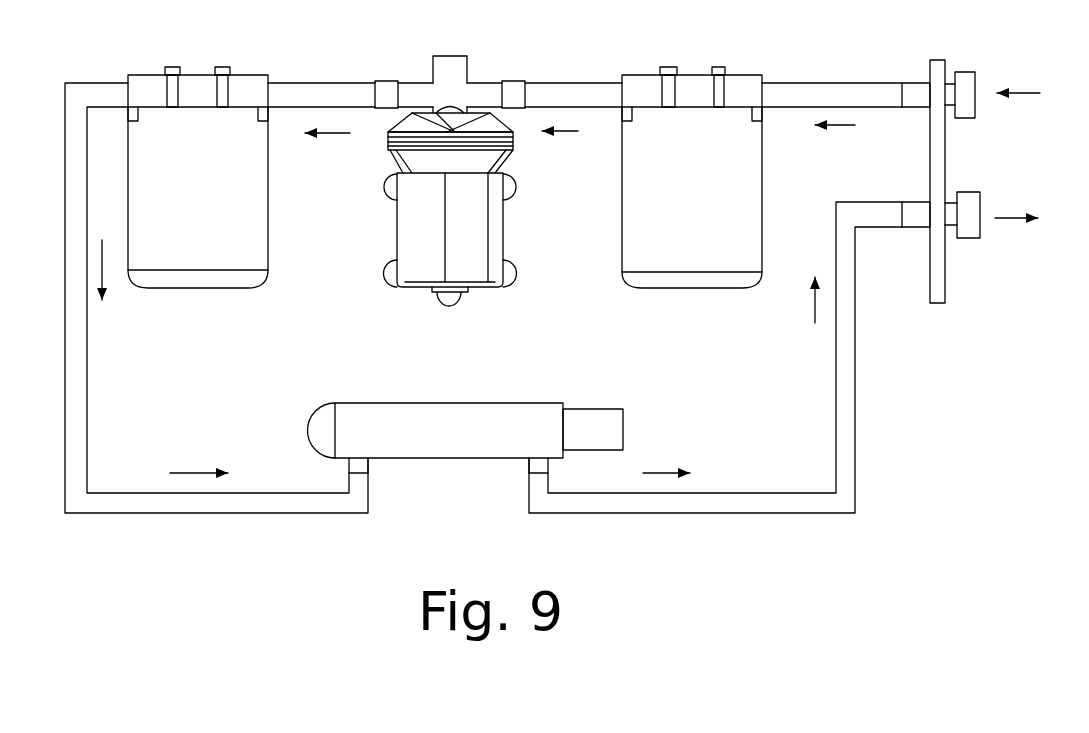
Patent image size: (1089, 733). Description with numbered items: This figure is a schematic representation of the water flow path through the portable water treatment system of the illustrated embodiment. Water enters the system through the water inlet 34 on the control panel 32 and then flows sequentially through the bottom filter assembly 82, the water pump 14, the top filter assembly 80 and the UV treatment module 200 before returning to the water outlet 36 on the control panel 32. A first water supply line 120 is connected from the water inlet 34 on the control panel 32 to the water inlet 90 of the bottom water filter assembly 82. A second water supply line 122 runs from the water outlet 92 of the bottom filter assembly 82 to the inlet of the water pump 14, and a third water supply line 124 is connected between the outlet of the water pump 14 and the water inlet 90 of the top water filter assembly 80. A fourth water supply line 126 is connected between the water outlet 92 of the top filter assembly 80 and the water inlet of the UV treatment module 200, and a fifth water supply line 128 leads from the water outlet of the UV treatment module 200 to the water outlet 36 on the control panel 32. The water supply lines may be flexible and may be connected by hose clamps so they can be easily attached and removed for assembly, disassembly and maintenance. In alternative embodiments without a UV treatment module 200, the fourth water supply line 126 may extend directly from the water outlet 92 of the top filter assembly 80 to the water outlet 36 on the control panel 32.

The water pump 14 is at (413, 293).
The control panel 32 is at (947, 283).
The water inlet 34 is at (973, 72).
The water outlet 36 is at (970, 240).
The top filter assembly 80 is at (268, 232).
The bottom filter assembly 82 is at (622, 243).
The water inlet 90 is at (268, 97).
The water outlet 92 is at (128, 98).
The first water supply line 120 is at (833, 88).
The second water supply line 122 is at (560, 92).
The third water supply line 124 is at (308, 90).
The fourth water supply line 126 is at (87, 390).
The fifth water supply line 128 is at (836, 355).
The UV treatment module 200 is at (485, 403).